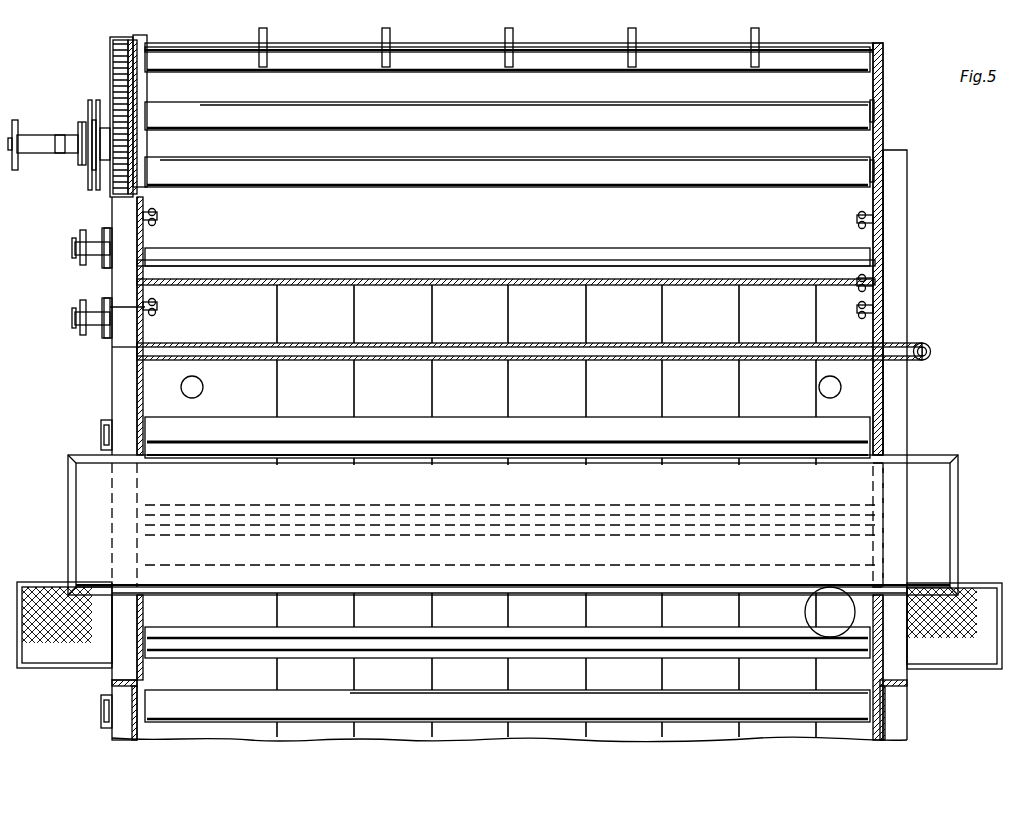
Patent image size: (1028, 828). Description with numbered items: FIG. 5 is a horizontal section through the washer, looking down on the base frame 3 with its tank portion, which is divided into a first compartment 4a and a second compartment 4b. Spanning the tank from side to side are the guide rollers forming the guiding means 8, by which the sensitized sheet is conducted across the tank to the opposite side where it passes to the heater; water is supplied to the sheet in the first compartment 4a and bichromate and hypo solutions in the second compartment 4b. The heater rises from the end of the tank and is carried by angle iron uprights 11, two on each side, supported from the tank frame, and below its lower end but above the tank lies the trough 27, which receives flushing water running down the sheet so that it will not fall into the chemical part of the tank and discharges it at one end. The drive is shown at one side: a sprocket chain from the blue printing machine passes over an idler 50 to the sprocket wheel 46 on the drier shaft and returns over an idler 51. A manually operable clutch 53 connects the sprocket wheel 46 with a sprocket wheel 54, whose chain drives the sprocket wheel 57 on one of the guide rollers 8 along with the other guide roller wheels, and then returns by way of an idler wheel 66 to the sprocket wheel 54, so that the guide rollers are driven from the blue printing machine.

The base frame 3 is at (112, 383).
The first compartment 4a is at (858, 680).
The second compartment 4b is at (865, 378).
The guiding means 8 is at (860, 425).
The angle iron uprights 11 is at (150, 218).
The trough 27 is at (137, 355).
The sprocket wheel 46 is at (83, 166).
The idler 50 is at (80, 308).
The idler 51 is at (80, 240).
The manually operable clutch 53 is at (100, 104).
The sprocket wheel 54 is at (82, 124).
The sprocket wheel 57 is at (105, 298).
The idler wheel 66 is at (105, 262).